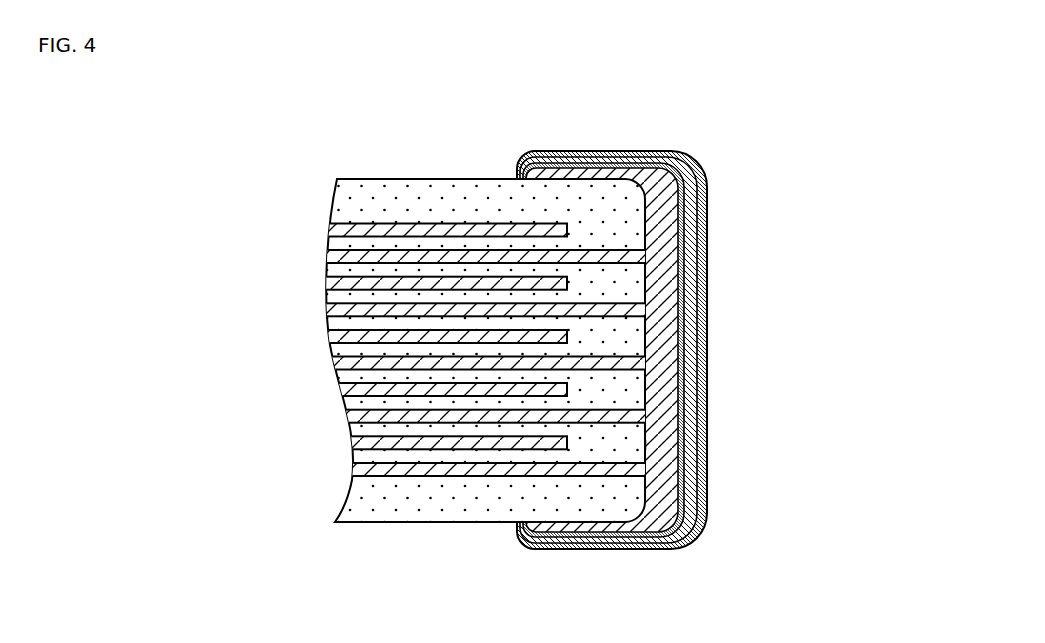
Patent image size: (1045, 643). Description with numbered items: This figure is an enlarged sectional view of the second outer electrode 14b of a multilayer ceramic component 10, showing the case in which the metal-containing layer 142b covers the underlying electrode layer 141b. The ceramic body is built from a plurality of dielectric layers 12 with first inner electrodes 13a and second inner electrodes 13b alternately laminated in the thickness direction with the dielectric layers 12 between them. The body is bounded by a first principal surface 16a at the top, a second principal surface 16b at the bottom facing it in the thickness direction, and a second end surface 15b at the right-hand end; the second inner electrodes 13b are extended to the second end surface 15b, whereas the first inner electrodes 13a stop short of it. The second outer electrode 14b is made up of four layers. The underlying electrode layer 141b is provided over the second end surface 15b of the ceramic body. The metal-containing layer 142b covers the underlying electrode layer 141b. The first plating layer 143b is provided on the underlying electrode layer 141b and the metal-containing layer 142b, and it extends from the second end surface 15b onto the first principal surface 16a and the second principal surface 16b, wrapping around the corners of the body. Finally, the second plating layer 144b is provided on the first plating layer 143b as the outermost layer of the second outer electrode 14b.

The multilayer ceramic capacitor 10 is at (584, 314).
The dielectric layers 12 is at (363, 273).
The first inner electrodes 13a is at (538, 280).
The second inner electrodes 13b is at (520, 422).
The second outer electrode 14b is at (726, 350).
The underlying electrode layer 141b is at (862, 425).
The metal-containing layer 142b is at (682, 302).
The first plating layer 143b is at (690, 357).
The second plating layer 144b is at (703, 414).
The second end surface 15b is at (652, 446).
The first principal surface 16a is at (452, 175).
The second principal surface 16b is at (392, 523).